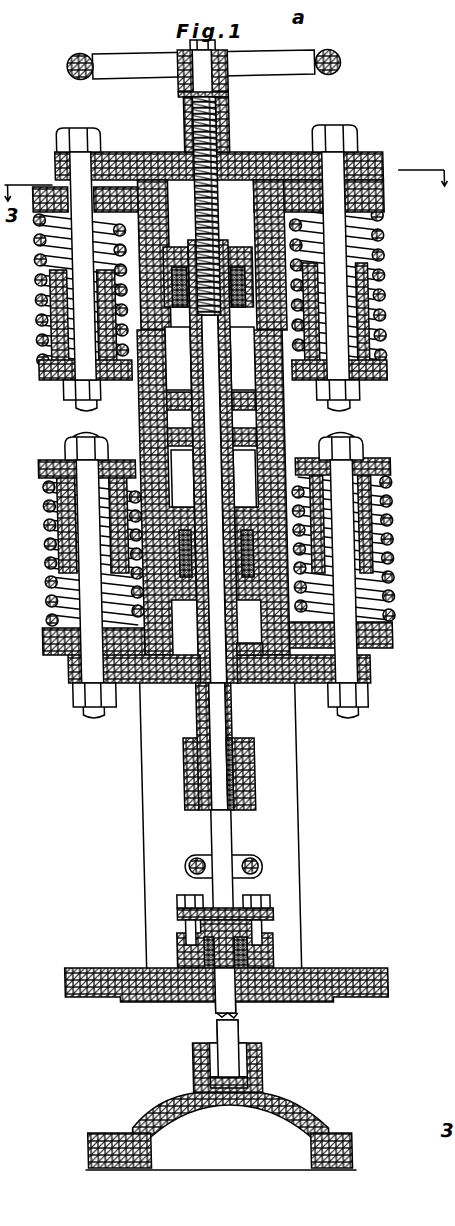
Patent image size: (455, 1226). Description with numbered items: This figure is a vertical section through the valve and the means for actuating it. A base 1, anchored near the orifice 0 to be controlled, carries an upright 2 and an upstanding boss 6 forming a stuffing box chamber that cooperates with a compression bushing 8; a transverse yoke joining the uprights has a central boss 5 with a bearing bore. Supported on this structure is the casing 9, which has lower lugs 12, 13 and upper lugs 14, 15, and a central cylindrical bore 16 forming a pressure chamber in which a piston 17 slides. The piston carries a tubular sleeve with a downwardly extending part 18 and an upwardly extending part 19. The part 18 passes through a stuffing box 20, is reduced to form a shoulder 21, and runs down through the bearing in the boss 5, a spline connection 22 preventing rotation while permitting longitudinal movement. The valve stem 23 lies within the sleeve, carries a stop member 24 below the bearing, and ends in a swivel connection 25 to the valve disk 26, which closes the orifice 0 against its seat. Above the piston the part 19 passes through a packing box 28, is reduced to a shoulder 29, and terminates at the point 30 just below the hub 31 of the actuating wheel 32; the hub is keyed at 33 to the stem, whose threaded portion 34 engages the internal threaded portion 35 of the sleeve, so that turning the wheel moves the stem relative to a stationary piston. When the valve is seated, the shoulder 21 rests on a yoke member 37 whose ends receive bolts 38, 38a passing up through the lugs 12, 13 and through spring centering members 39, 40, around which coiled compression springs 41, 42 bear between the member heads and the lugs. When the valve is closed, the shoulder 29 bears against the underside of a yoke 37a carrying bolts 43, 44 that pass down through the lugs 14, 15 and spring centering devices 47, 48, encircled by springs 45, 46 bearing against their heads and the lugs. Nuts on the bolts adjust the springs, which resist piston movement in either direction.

The orifice 0 is at (280, 1162).
The base 1 is at (332, 968).
The upright 2 is at (276, 878).
The central boss 5 is at (225, 767).
The upstanding boss 6 is at (256, 952).
The compression bushing 8 is at (253, 914).
The casing 9 is at (136, 413).
The lug 12 is at (282, 684).
The lug 13 is at (130, 682).
The lug 14 is at (375, 188).
The lug 15 is at (40, 190).
The cylindrical bore 16 is at (265, 438).
The piston 17 is at (270, 412).
The downwardly extending part of tubular rod 18 is at (248, 470).
The upwardly extending part of tubular rod 19 is at (231, 366).
The stuffing box 20 is at (240, 480).
The shoulder 21 is at (238, 649).
The spline connection 22 is at (230, 798).
The valve stem 23 is at (222, 838).
The stop member 24 is at (242, 862).
The swivel connection 25 is at (232, 1080).
The valve disk 26 is at (282, 1102).
The packing box 28 is at (214, 326).
The shoulder 29 is at (190, 152).
The terminating point of sleeve 30 is at (224, 97).
The hub 31 is at (178, 54).
The valve actuating wheel 32 is at (338, 67).
The key 33 is at (176, 94).
The screw-threaded portion 34 is at (226, 114).
The internal screw-threaded portion 35 is at (257, 165).
The yoke member 37 is at (178, 686).
The yoke 37a is at (277, 162).
The bolt 38 is at (340, 665).
The bolt 38a is at (62, 670).
The spring centering member 39 is at (380, 468).
The spring centering member 40 is at (40, 462).
The coiled compression spring 41 is at (382, 490).
The coiled compression spring 42 is at (31, 522).
The bolt 43 is at (338, 165).
The bolt 44 is at (68, 160).
The spring 45 is at (378, 300).
The spring 46 is at (34, 258).
The spring centering device 47 is at (382, 370).
The spring centering device 48 is at (44, 378).